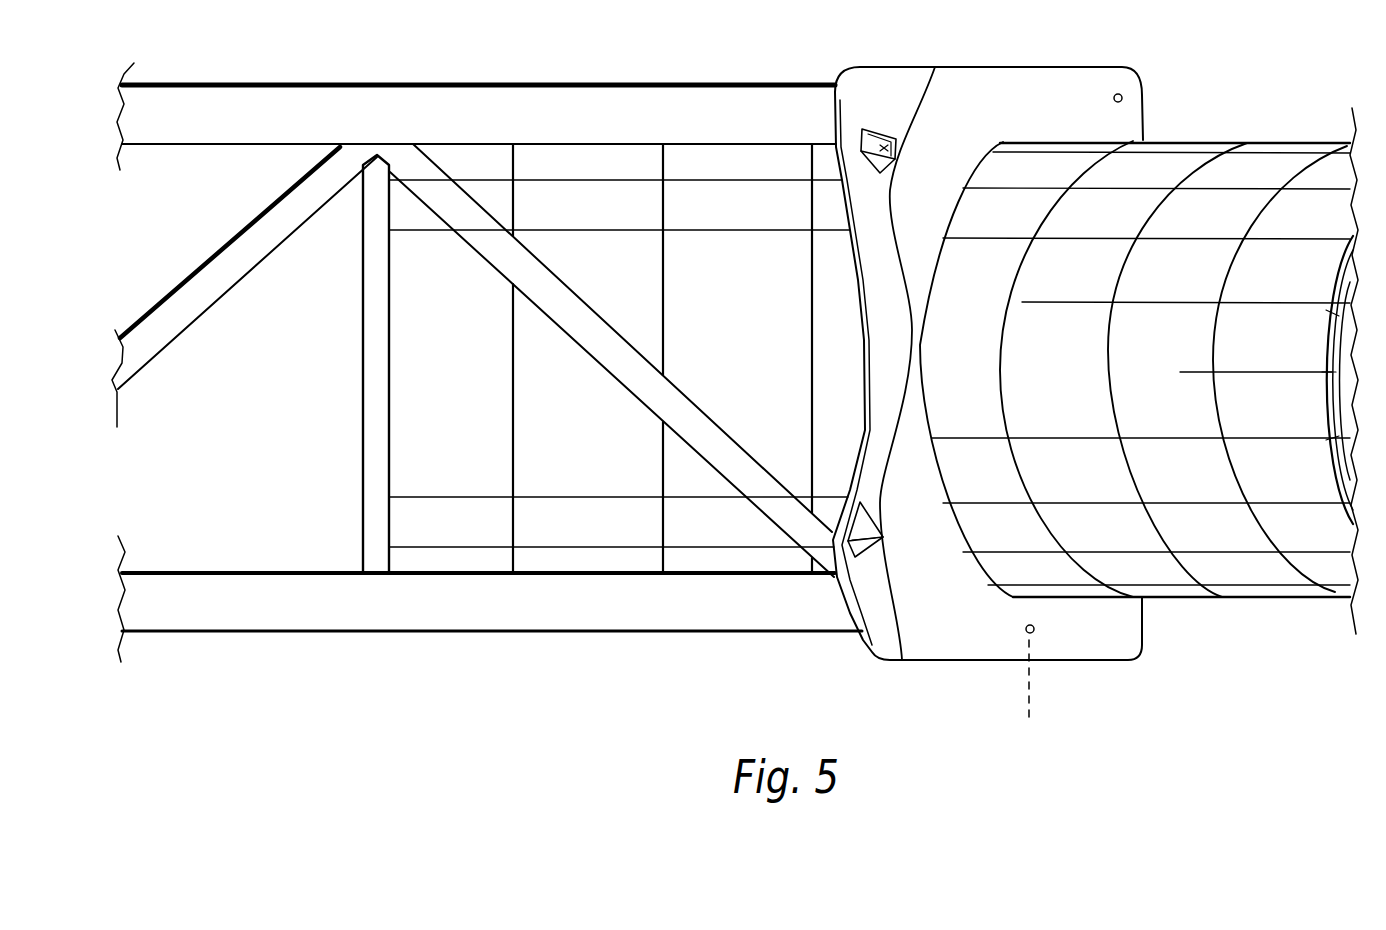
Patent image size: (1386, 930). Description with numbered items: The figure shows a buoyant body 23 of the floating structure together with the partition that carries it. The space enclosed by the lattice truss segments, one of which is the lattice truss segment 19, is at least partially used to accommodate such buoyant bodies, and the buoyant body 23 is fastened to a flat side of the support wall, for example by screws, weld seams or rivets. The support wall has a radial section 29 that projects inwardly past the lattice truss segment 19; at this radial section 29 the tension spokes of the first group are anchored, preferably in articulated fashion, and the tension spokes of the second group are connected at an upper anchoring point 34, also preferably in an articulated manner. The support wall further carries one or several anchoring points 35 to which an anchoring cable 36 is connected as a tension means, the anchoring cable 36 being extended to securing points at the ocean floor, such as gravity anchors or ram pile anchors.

The lattice truss segment 19 is at (550, 653).
The buoyant body 23 is at (1253, 127).
The radial section 29 is at (1138, 118).
The upper anchoring point 34 is at (1122, 94).
The anchoring point 35 is at (1035, 628).
The anchoring cable 36 is at (1027, 687).